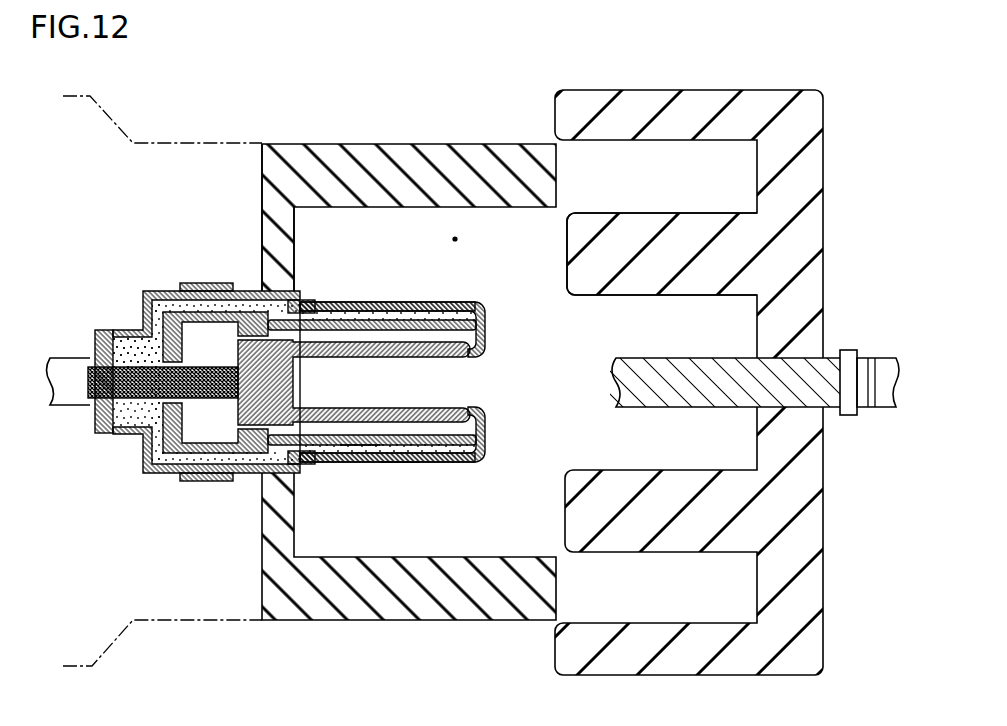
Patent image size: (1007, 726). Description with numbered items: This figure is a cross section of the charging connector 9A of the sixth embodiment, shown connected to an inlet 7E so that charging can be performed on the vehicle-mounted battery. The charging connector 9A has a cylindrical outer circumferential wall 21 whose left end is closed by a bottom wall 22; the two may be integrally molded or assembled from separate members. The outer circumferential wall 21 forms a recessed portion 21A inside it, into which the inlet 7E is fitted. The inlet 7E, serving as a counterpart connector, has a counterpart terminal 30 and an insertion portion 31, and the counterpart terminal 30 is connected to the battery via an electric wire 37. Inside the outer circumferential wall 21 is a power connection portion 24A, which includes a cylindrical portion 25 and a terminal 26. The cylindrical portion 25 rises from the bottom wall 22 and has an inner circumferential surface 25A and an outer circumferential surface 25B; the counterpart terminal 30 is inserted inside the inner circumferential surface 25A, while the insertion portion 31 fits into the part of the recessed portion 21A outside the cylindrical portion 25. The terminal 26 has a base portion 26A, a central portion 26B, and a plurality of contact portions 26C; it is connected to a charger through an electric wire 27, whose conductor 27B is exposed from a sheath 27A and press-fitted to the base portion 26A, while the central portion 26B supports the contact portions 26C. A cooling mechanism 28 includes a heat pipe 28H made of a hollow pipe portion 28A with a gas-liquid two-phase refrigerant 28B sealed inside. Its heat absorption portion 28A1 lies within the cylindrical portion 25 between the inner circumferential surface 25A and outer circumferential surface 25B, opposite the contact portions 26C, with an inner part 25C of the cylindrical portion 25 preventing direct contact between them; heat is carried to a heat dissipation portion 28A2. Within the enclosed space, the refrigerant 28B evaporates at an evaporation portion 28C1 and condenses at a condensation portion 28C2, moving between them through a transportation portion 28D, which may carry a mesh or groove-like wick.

The inlet 7E is at (846, 160).
The charging connector 9A is at (190, 130).
The outer circumferential wall 21 is at (395, 175).
The recessed portion 21A is at (455, 236).
The bottom wall 22 is at (283, 218).
The power connection portion 24A is at (417, 351).
The cylindrical portion 25 is at (399, 351).
The inner circumferential surface 25A is at (405, 347).
The outer circumferential surface 25B is at (400, 302).
The inner part 25C is at (395, 330).
The terminal 26 is at (369, 426).
The base portion 26A is at (300, 428).
The central portion 26B is at (360, 440).
The contact portions 26C is at (409, 482).
The electric wire 27 is at (138, 458).
The sheath 27A is at (67, 380).
The conductor 27B is at (140, 384).
The cooling mechanism 28 is at (259, 368).
The pipe portion 28A is at (259, 358).
The heat absorption portion 28A1 is at (262, 403).
The heat dissipation portion 28A2 is at (120, 352).
The refrigerant 28B is at (156, 318).
The evaporation portion 28C1 is at (357, 318).
The condensation portion 28C2 is at (148, 338).
The transportation portion 28D is at (215, 292).
The heat pipe 28H is at (259, 341).
The counterpart terminal 30 is at (657, 380).
The insertion portion 31 is at (674, 252).
The electric wire 37 is at (882, 386).